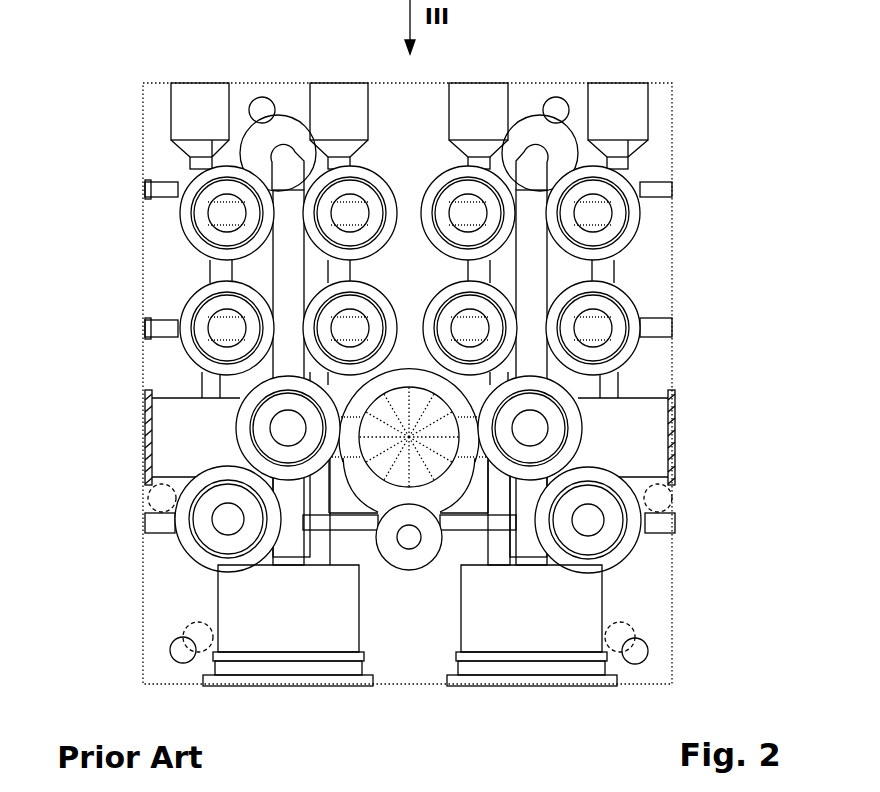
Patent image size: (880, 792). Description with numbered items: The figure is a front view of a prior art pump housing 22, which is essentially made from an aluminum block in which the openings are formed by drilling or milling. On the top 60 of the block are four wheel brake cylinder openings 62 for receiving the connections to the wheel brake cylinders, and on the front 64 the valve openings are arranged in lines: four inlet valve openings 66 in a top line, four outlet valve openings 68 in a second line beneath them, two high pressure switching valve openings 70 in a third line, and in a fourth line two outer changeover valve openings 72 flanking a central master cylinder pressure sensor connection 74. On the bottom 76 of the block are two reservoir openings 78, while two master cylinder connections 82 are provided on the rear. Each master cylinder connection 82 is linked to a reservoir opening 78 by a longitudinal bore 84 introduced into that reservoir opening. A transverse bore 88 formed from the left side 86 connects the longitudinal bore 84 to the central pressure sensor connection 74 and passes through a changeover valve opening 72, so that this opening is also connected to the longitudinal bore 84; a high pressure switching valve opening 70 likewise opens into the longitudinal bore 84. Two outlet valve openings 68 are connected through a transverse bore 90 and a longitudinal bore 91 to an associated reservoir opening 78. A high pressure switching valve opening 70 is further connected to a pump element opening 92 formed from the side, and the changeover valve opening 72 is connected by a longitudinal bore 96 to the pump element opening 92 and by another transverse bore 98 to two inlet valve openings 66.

The pump housing 22 is at (106, 100).
The top 60 is at (660, 76).
The wheel brake cylinder openings 62 is at (200, 90).
The front 64 is at (672, 598).
The inlet valve openings 66 is at (212, 213).
The outlet valve openings 68 is at (210, 325).
The high pressure switching valve openings 70 is at (288, 428).
The changeover valve openings 72 is at (210, 528).
The master cylinder pressure sensor connection 74 is at (409, 548).
The bottom 76 is at (622, 690).
The reservoir openings 78 is at (283, 660).
The master cylinder connections 82 is at (276, 125).
The longitudinal bore 84 is at (290, 545).
The left side 86 is at (145, 598).
The transverse bore 88 is at (158, 522).
The transverse bore 90 is at (165, 328).
The longitudinal bore 91 is at (330, 550).
The pump element opening 92 is at (158, 442).
The longitudinal bore 96 is at (200, 378).
The transverse bore 98 is at (175, 190).